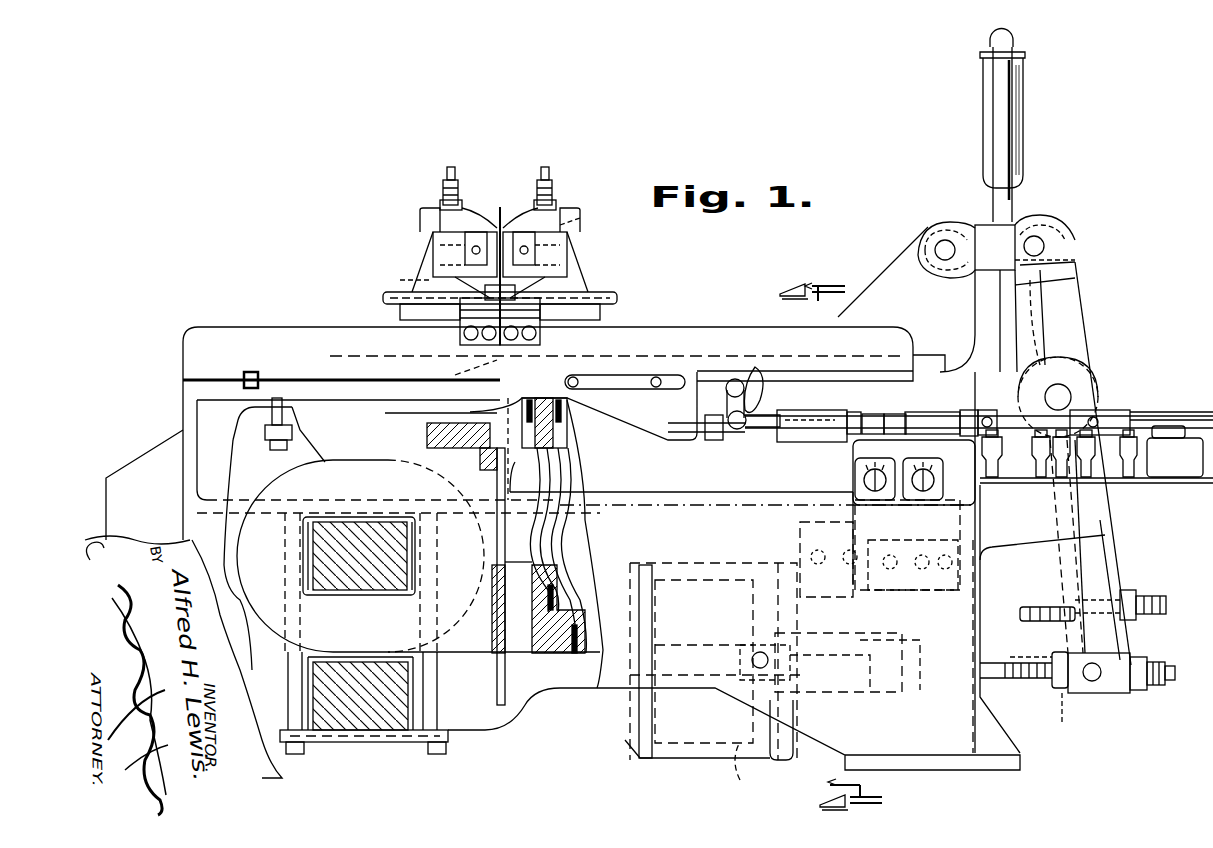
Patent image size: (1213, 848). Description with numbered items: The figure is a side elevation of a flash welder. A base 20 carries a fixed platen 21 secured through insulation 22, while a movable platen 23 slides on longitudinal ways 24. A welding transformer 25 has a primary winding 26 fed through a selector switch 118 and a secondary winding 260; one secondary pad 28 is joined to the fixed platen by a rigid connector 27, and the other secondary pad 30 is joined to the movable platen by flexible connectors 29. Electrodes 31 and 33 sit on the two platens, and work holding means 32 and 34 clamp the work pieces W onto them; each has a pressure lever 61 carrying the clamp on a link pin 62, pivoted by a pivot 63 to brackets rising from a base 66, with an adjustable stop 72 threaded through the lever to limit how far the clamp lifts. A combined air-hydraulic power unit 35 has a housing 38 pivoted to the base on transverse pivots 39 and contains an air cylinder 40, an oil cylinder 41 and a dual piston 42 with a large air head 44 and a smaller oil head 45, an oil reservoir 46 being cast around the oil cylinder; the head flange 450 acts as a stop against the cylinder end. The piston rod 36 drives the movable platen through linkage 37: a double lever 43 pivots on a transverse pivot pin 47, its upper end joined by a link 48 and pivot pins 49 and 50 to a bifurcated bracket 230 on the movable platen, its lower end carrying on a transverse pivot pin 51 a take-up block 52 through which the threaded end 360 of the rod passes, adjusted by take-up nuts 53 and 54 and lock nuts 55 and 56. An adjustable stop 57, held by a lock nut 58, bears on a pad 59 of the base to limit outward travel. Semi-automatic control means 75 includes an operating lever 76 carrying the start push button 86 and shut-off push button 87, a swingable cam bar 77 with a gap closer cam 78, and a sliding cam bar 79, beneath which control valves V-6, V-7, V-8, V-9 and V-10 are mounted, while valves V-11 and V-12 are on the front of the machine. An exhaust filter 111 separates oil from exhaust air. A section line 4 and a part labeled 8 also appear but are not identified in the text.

The base 20 is at (183, 408).
The fixed platen 21 is at (183, 347).
The insulation 22 is at (310, 380).
The movable platen 23 is at (695, 325).
The longitudinal ways 24 is at (800, 357).
The welding transformer 25 is at (362, 736).
The primary winding 26 is at (342, 465).
The rigid connector 27 is at (480, 362).
The secondary pad 28 is at (470, 452).
The flexible connectors 29 is at (545, 528).
The secondary pad 30 is at (565, 630).
The electrode 31 is at (455, 325).
The work holding means 32 is at (421, 272).
The electrode 33 is at (545, 325).
The work holding means 34 is at (579, 272).
The combined air-hydraulic power unit 35 is at (702, 770).
The piston rod 36 is at (1002, 680).
The linkage 37 is at (1080, 238).
The housing 38 is at (640, 742).
The pivots 39 is at (752, 655).
The air cylinder 40 is at (715, 580).
The oil cylinder 41 is at (845, 640).
The dual piston 42 is at (830, 695).
The double lever 43 is at (1085, 345).
The large air head 44 is at (747, 767).
The smaller oil head 45 is at (878, 695).
The oil reservoir 46 is at (805, 762).
The transverse pivot pin 47 is at (1065, 400).
The link 48 is at (975, 225).
The pivot pin 49 is at (1035, 236).
The pivot pin 50 is at (940, 258).
The transverse pivot pin 51 is at (1090, 684).
The take-up block 52 is at (1092, 655).
The take-up nut 53 is at (1130, 690).
The take-up nut 54 is at (1064, 722).
The lock nut 55 is at (1160, 662).
The lock nut 56 is at (1060, 652).
The adjustable stop 57 is at (1165, 596).
The lock nut 58 is at (1128, 590).
The pad 59 is at (1000, 607).
The pressure lever 61 is at (468, 225).
The link pin 62 is at (440, 252).
The pivot 63 is at (493, 247).
The base 66 is at (402, 320).
The adjustable stop 72 is at (461, 185).
The semi-automatic control means 75 is at (877, 416).
The operating lever 76 is at (760, 368).
The swingable cam bar 77 is at (775, 442).
The gap closer cam 78 is at (925, 434).
The sliding cam bar 79 is at (872, 434).
The start push button 86 is at (733, 380).
The shut-off push button 87 is at (730, 438).
The exhaust filter 111 is at (1026, 132).
The selector switch 118 is at (97, 560).
The bifurcated bracket 230 is at (890, 240).
The secondary winding 260 is at (462, 655).
The threaded end 360 is at (1040, 690).
The head flange 450 is at (898, 645).
The section line 4 is at (831, 546).
The valve 8 is at (1192, 478).
The work pieces W is at (383, 297).
The control valve V-6 is at (1090, 475).
The control valve V-7 is at (1135, 470).
The control valve V-8 is at (1042, 480).
The control valve V-9 is at (1066, 475).
The control valve V-10 is at (995, 470).
The control valve V-11 is at (855, 474).
The control valve V-12 is at (940, 500).